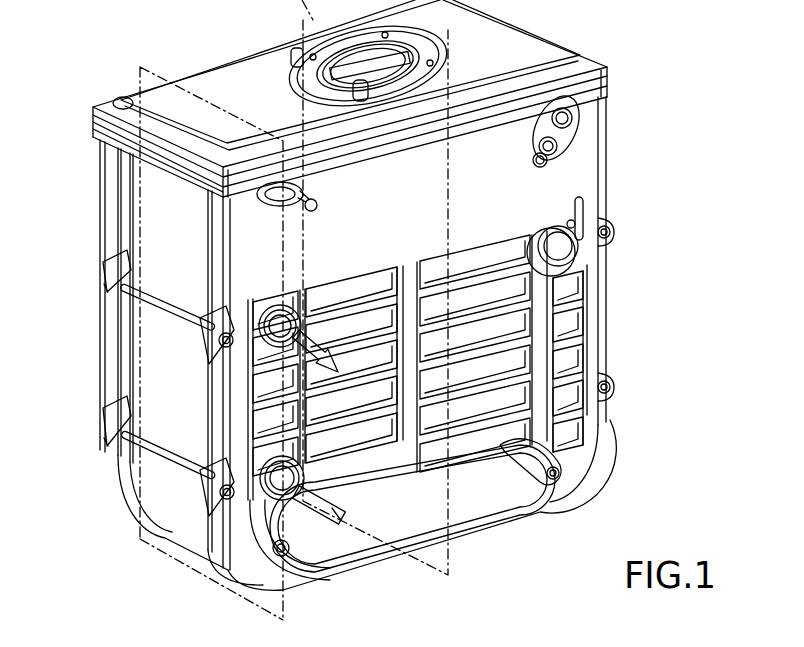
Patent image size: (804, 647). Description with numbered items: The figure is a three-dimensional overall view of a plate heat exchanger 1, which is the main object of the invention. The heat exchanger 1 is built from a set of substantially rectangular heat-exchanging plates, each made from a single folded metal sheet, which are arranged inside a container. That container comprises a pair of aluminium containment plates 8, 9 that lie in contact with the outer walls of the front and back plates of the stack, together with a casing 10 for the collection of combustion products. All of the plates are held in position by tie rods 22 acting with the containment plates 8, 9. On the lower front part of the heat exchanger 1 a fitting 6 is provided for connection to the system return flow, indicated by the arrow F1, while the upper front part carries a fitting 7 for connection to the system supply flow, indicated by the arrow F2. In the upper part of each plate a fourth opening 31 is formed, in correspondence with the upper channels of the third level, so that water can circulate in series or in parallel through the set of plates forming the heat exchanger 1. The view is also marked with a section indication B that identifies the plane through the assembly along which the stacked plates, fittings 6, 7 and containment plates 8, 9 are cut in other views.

The plate heat exchanger 1 is at (655, 145).
The fitting 6 is at (245, 512).
The fitting 7 is at (245, 346).
The containment plate 8 is at (565, 181).
The containment plate 9 is at (134, 98).
The casing 10 is at (158, 379).
The tie rods 22 is at (162, 306).
The fourth opening 31 is at (569, 260).
The section plane B is at (140, 67).
The arrow F1 is at (300, 527).
The arrow F2 is at (325, 345).